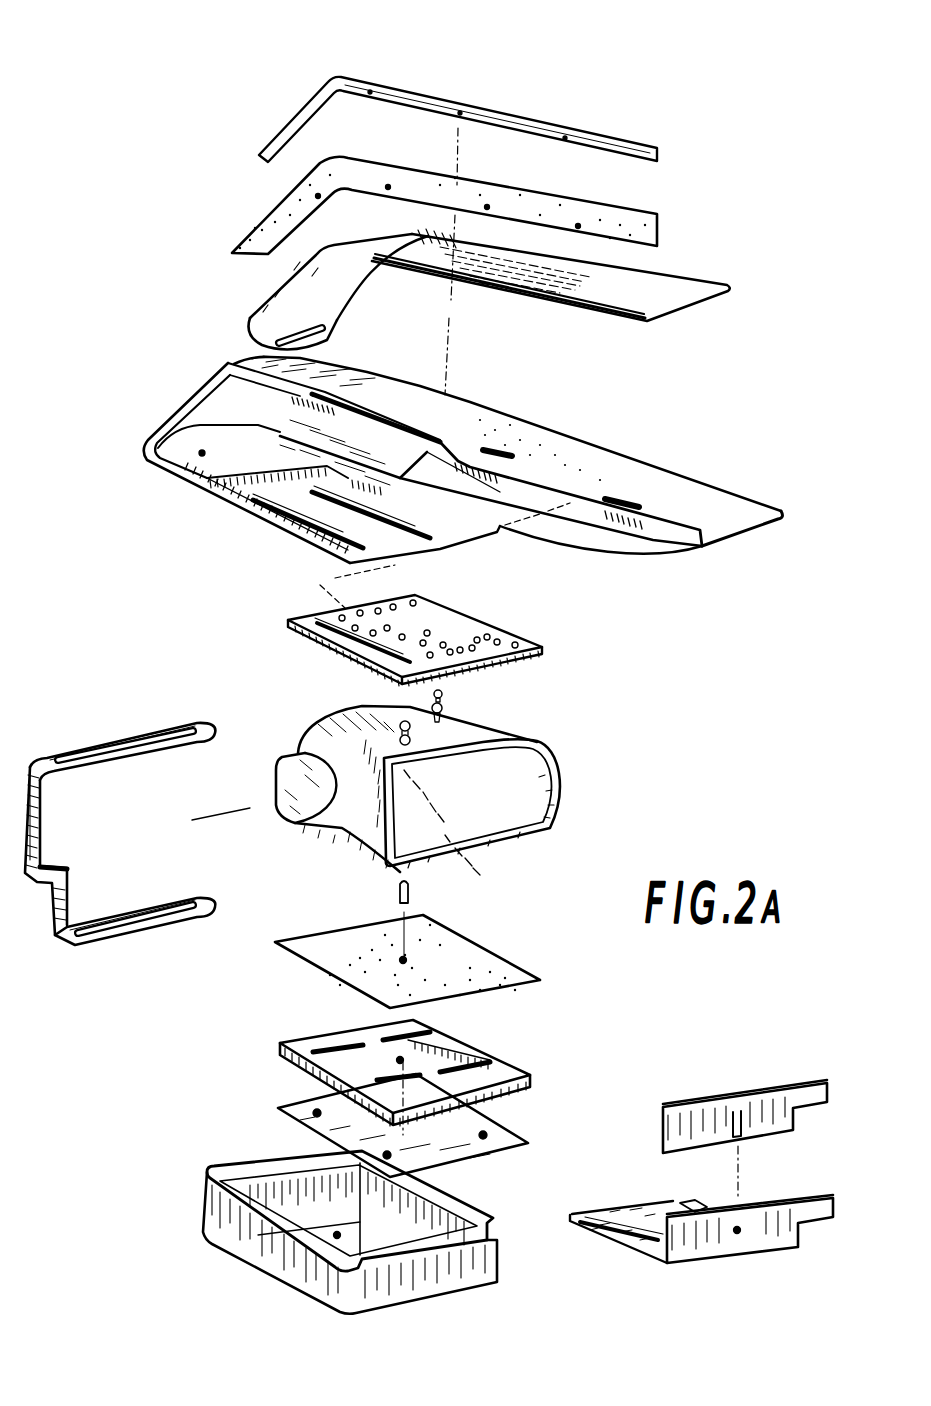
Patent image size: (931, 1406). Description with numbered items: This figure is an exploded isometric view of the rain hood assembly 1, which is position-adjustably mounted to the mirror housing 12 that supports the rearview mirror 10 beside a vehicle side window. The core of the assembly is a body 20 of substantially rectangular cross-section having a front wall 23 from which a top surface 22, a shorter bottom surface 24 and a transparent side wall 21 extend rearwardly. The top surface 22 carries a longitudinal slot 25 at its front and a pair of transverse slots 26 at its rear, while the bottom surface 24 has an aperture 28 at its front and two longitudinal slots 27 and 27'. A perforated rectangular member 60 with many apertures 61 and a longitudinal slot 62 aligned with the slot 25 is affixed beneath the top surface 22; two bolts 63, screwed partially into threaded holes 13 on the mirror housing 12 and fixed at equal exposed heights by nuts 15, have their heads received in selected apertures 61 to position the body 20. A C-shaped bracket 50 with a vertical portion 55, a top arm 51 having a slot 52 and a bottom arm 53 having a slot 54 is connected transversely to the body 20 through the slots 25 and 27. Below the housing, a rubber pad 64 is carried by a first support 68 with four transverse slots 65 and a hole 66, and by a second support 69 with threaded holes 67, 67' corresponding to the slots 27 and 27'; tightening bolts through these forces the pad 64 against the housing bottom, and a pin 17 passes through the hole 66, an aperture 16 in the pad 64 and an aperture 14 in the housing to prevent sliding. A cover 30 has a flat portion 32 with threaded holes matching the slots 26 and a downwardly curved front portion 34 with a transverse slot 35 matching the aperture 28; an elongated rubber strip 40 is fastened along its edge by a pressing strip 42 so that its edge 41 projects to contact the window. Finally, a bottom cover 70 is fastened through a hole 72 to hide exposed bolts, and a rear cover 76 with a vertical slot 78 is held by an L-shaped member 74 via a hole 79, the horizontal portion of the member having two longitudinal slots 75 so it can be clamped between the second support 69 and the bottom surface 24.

The rain hood assembly 1 is at (693, 73).
The rearview mirror 10 is at (517, 807).
The mirror housing 12 is at (560, 800).
The threaded holes 13 is at (437, 737).
The aperture 14 is at (405, 795).
The nuts 15 is at (445, 712).
The aperture 16 is at (403, 960).
The pin 17 is at (410, 903).
The body 20 is at (687, 477).
The side wall 21 is at (620, 547).
The top surface 22 is at (510, 427).
The front wall 23 is at (214, 403).
The bottom surface 24 is at (397, 560).
The longitudinal slot 25 is at (393, 417).
The transverse slots 26 is at (622, 500).
The longitudinal slot 27 is at (308, 549).
The slot 27' is at (426, 539).
The aperture 28 is at (202, 453).
The cover 30 is at (673, 270).
The flat portion 32 is at (643, 298).
The curved front portion 34 is at (282, 310).
The transverse slot 35 is at (337, 320).
The rubber strip 40 is at (660, 215).
The edge 41 is at (553, 192).
The pressing strip 42 is at (627, 139).
The C-shaped bracket 50 is at (47, 927).
The top arm 51 is at (50, 752).
The slot 52 is at (177, 725).
The bottom arm 53 is at (113, 940).
The slot 54 is at (177, 893).
The vertical portion 55 is at (43, 817).
The perforated member 60 is at (500, 668).
The apertures 61 is at (497, 643).
The longitudinal slot 62 is at (350, 637).
The bolts 63 is at (447, 688).
The pad 64 is at (503, 960).
The transverse slots 65 is at (490, 1060).
The hole 66 is at (400, 1060).
The threaded holes 67 is at (408, 1150).
The hole 67' is at (523, 1115).
The first support 68 is at (300, 1043).
The second support 69 is at (317, 1113).
The bottom cover 70 is at (450, 1297).
The hole 72 is at (337, 1235).
The L-shaped member 74 is at (680, 1267).
The longitudinal slots 75 is at (597, 1213).
The rear cover 76 is at (760, 1092).
The vertical slot 78 is at (737, 1137).
The hole 79 is at (737, 1230).